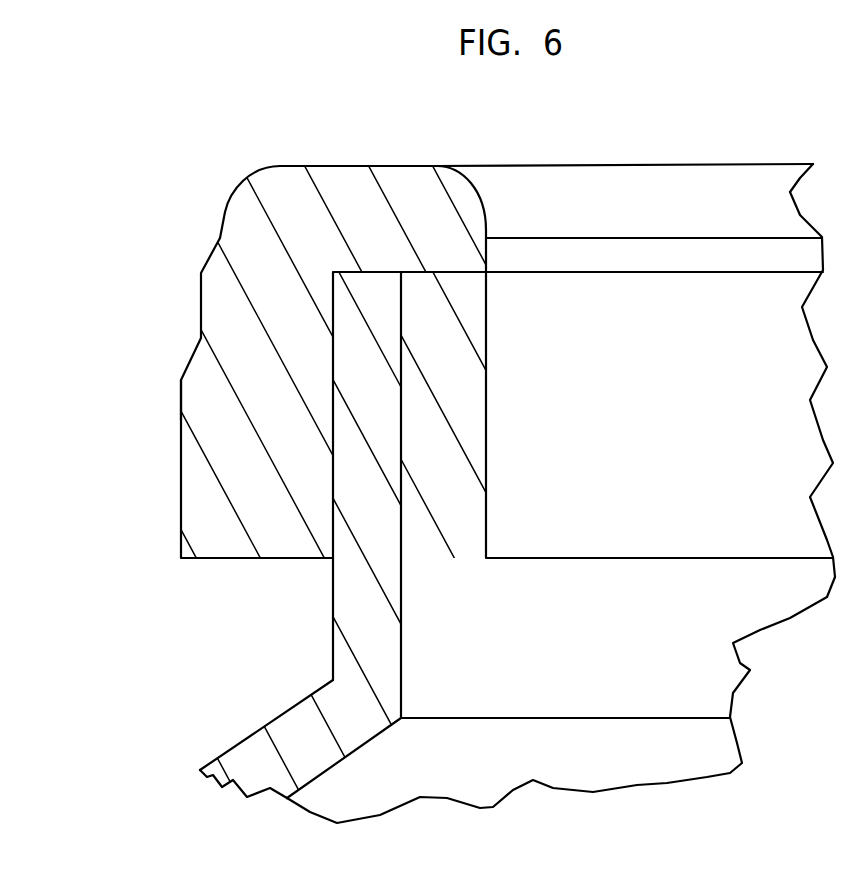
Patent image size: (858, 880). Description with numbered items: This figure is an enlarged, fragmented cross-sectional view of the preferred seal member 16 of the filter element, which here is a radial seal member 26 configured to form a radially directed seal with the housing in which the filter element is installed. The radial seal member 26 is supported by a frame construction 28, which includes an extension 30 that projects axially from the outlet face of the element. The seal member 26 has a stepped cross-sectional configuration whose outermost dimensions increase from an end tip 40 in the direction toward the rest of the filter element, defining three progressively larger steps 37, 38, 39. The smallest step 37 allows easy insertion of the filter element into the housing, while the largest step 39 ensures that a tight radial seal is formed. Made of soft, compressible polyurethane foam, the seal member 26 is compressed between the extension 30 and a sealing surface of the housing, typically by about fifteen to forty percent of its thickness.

The seal member 16 is at (278, 166).
The radial seal member 26 is at (181, 483).
The frame construction 28 is at (262, 686).
The extension 30 is at (333, 488).
The smallest step 37 is at (227, 212).
The step 38 is at (201, 303).
The largest step 39 is at (181, 408).
The end tip 40 is at (357, 165).